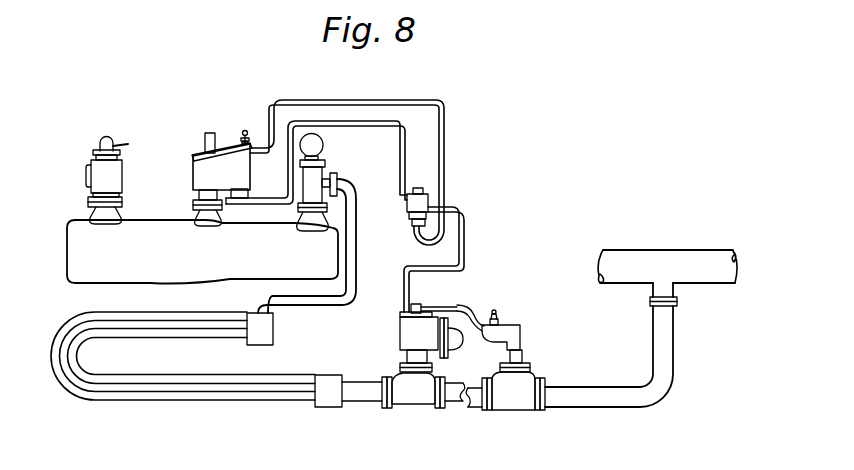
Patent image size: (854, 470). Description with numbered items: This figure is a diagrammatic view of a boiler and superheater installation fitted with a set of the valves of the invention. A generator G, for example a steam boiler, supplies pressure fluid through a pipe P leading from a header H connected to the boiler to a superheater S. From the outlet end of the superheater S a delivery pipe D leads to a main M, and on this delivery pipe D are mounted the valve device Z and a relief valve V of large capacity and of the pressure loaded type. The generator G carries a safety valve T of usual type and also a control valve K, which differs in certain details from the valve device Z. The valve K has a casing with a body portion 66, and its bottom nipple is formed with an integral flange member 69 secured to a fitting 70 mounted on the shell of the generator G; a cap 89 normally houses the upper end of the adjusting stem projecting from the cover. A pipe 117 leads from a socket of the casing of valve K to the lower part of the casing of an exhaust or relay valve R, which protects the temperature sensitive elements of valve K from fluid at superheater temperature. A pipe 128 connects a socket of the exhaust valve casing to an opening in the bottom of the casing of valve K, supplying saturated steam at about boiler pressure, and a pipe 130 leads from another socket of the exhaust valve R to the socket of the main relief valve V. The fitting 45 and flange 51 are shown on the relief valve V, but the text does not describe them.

The safety valve T is at (97, 173).
The generator G is at (157, 231).
The control valve K is at (192, 136).
The body portion 66 is at (222, 165).
The cap 89 is at (211, 133).
The integral flange member 69 is at (197, 197).
The fitting 70 is at (216, 223).
The header H is at (318, 183).
The pipe 117 is at (330, 99).
The pipe 128 is at (333, 123).
The exhaust valve R is at (436, 192).
The pipe 130 is at (464, 224).
The pipe P is at (346, 254).
The superheater S is at (255, 398).
The delivery pipe D is at (378, 393).
The relief valve V is at (396, 332).
The fitting 45 is at (438, 304).
The flange 51 is at (400, 362).
The valve device Z is at (510, 320).
The main M is at (693, 262).